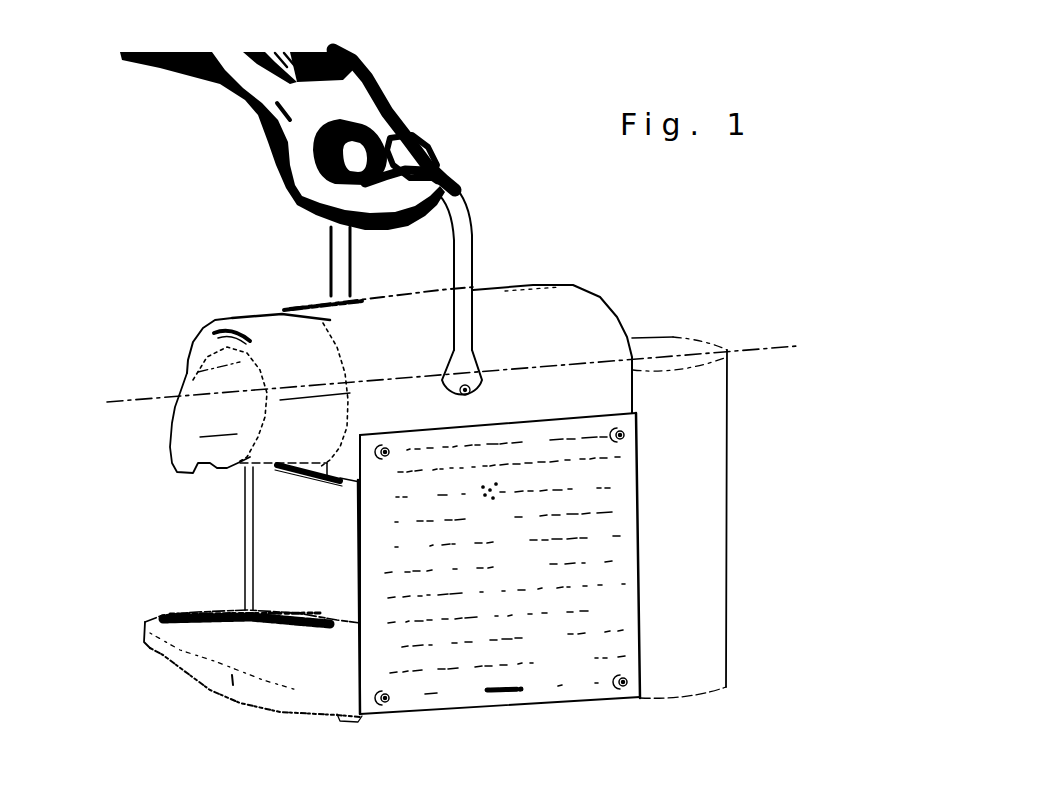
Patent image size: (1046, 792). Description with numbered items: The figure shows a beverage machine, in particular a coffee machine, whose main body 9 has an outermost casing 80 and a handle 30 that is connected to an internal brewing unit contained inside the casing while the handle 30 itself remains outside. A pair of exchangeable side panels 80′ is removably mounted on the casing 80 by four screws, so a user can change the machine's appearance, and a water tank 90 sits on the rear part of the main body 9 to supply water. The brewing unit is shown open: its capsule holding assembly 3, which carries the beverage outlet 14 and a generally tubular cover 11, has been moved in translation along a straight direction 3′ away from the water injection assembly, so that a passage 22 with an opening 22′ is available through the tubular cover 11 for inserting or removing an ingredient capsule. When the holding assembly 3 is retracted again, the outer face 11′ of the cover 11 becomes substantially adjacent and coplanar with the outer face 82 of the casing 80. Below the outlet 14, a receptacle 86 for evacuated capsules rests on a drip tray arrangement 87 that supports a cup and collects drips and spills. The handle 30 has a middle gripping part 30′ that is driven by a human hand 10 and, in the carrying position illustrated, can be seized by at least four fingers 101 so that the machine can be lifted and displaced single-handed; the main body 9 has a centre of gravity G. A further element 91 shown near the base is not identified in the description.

The main body 9 is at (597, 253).
The human hand 10 is at (262, 140).
The fingers 101 is at (337, 207).
The tubular cover 11 is at (267, 320).
The outer face 11′ is at (203, 340).
The holding assembly 3 is at (300, 427).
The direction 3′ is at (143, 400).
The beverage outlet 14 is at (183, 467).
The passage 22 is at (307, 303).
The opening 22′ is at (342, 305).
The handle 30 is at (467, 227).
The gripping part 30′ is at (453, 197).
The outermost casing 80 is at (600, 317).
The side panels 80′ is at (530, 670).
The outer face 82 is at (347, 437).
The receptacle 86 is at (287, 560).
The drip tray arrangement 87 is at (223, 668).
The water tank 90 is at (693, 673).
The bottom of housing 91 is at (500, 744).
The centre of gravity G is at (497, 495).